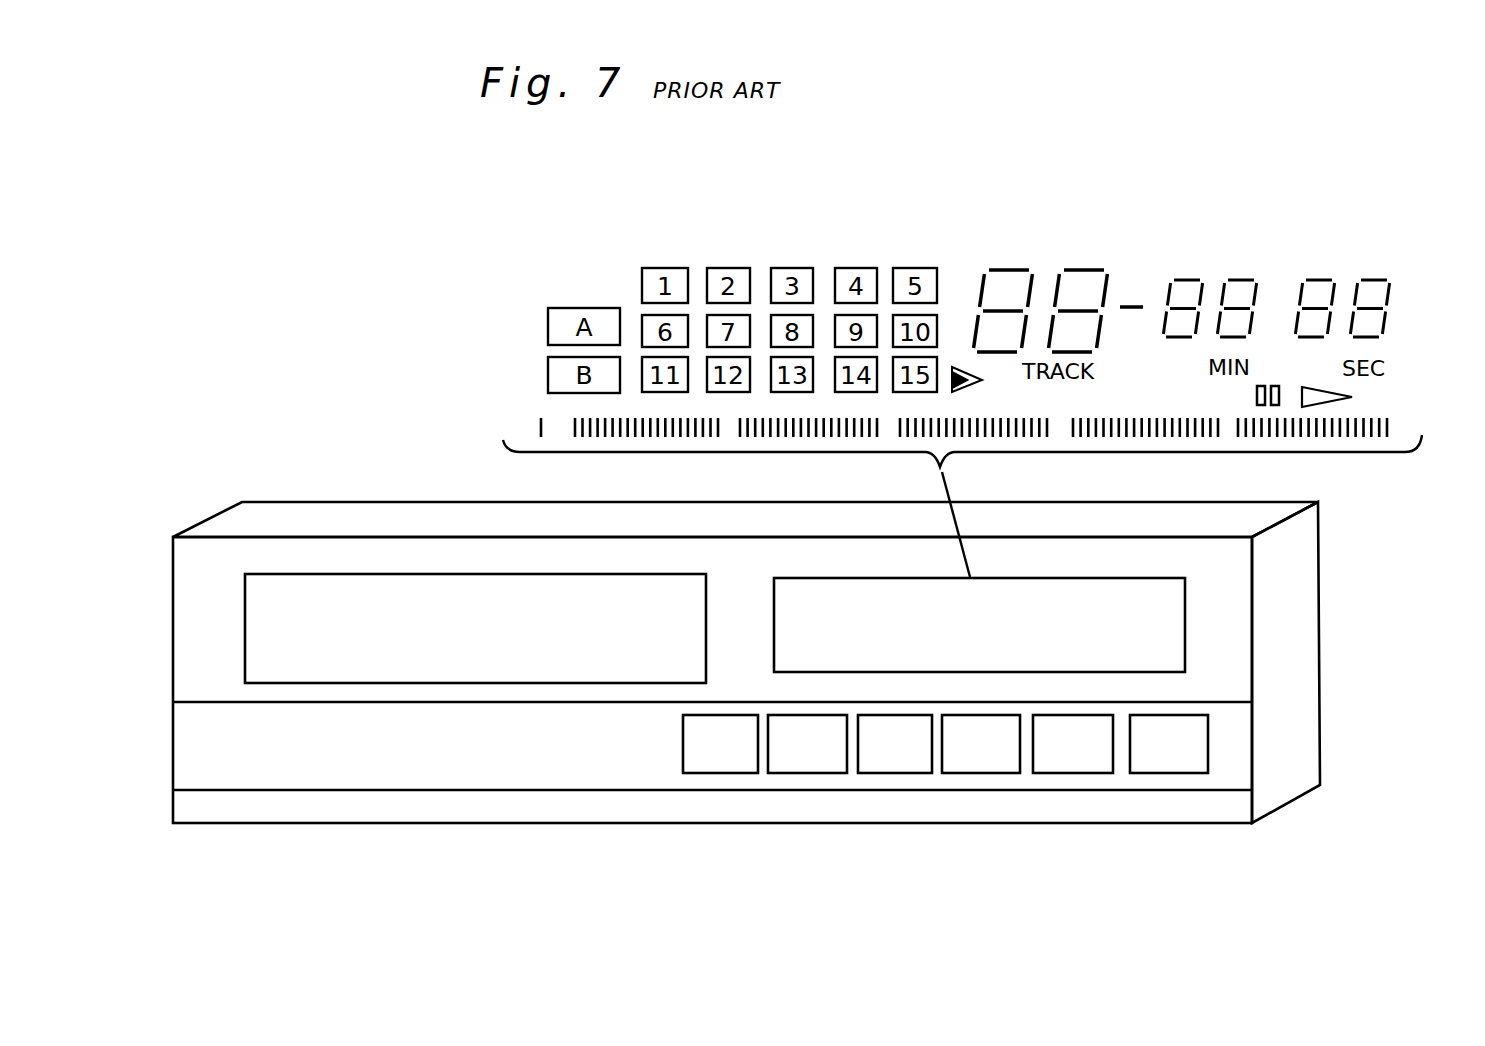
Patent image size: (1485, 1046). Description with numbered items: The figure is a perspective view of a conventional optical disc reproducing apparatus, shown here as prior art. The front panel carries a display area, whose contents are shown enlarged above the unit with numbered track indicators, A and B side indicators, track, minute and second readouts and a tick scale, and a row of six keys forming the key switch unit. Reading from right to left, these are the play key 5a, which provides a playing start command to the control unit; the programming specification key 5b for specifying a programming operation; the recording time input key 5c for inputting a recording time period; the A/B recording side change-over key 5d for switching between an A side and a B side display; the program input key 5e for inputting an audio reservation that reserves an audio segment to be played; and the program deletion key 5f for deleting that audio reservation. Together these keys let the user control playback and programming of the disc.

The play key 5a is at (1177, 774).
The programming specification key 5b is at (1083, 774).
The recording time input key 5c is at (987, 774).
The A/B recording side change-over key 5d is at (897, 774).
The program input key 5e is at (817, 774).
The program deletion key 5f is at (725, 774).